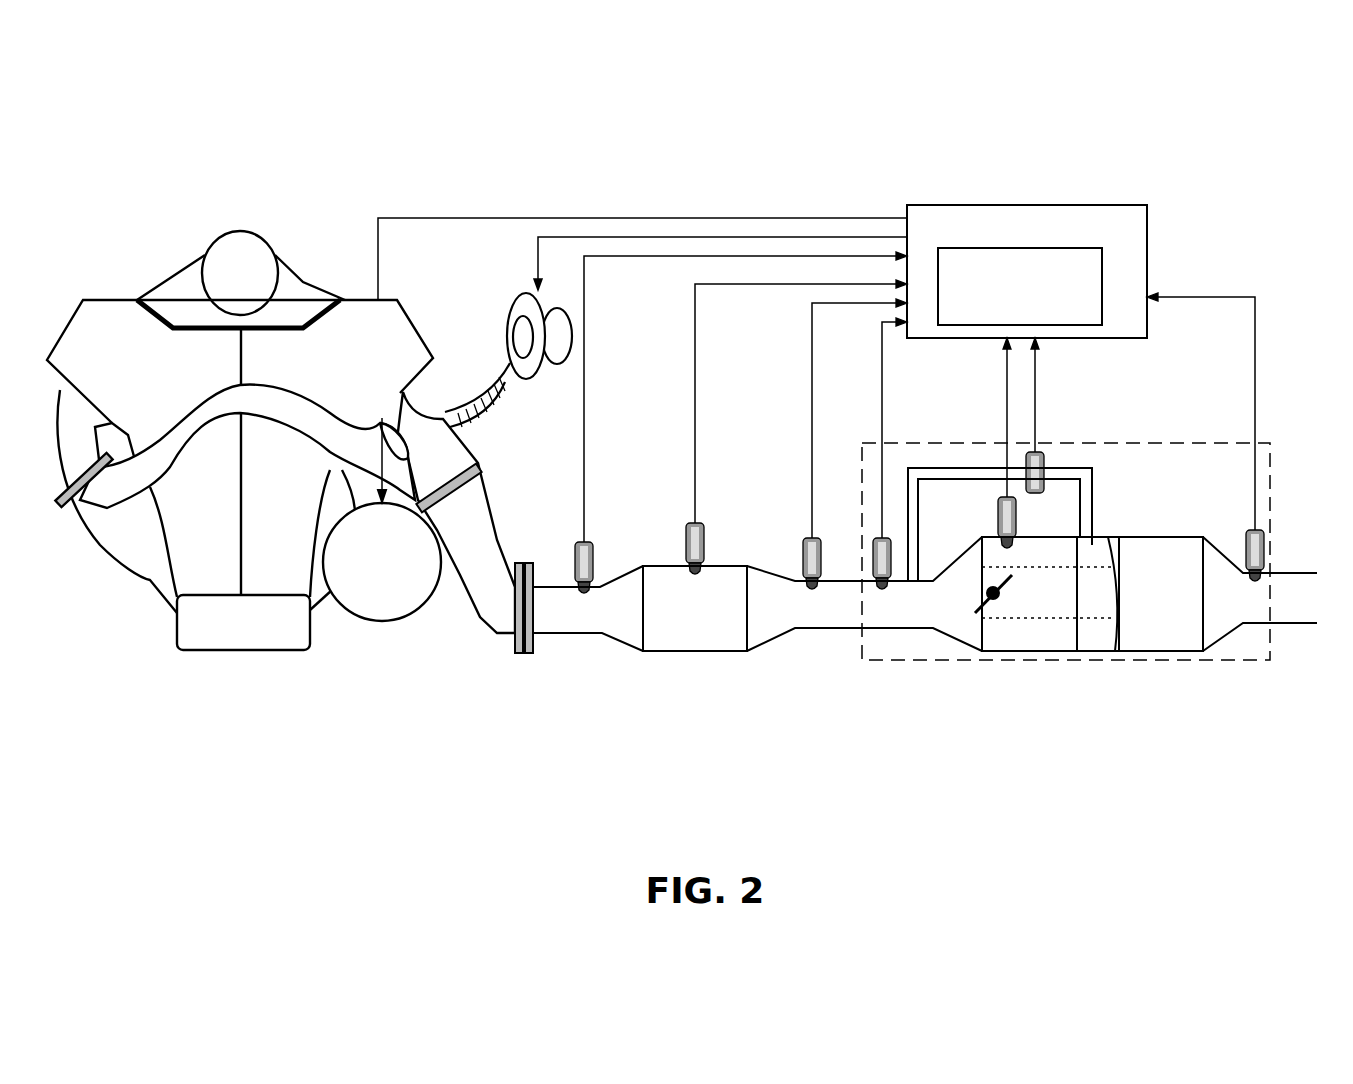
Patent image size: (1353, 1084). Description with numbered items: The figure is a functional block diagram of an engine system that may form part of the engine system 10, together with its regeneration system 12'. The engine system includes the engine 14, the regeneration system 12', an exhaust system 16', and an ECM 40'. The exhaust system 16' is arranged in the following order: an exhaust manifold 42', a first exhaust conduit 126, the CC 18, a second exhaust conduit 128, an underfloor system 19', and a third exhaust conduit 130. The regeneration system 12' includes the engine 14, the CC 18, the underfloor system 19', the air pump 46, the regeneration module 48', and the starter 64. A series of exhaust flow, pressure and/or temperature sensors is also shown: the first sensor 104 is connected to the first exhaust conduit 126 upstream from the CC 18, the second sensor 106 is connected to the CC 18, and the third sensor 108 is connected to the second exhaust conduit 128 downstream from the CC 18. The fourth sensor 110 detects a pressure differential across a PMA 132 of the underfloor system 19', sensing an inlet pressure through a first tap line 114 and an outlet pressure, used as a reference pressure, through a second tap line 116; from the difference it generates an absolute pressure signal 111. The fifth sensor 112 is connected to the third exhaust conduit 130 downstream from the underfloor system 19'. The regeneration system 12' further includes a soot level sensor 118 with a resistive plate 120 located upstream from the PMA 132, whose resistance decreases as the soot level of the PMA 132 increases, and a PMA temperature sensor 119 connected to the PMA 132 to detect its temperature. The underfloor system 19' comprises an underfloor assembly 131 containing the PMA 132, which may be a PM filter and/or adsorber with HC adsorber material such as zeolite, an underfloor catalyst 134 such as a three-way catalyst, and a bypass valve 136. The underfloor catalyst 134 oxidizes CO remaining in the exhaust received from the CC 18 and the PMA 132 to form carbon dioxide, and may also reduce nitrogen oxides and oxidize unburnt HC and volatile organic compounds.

The engine system 10 is at (141, 154).
The regeneration system 12' is at (1164, 157).
The engine 14 is at (106, 300).
The exhaust system 16' is at (458, 759).
The CC 18 is at (697, 651).
The underfloor system 19' is at (1066, 595).
The ECM 40' is at (762, 242).
The exhaust manifold 42' is at (458, 460).
The air pump 46 is at (510, 297).
The regeneration module 48' is at (1032, 266).
The starter 64 is at (398, 618).
The first exhaust flow, pressure and/or temperature sensor 104 is at (578, 540).
The second exhaust flow, pressure and/or temperature sensor 106 is at (688, 523).
The third exhaust flow, pressure and/or temperature sensor 108 is at (806, 538).
The fourth exhaust flow, pressure and/or temperature sensor 110 is at (1042, 448).
The absolute pressure signal 111 is at (1037, 395).
The fifth exhaust flow, pressure and/or temperature sensor 112 is at (1247, 532).
The first tap line 114 is at (963, 447).
The second tap line 116 is at (1093, 493).
The soot level sensor 118 is at (878, 538).
The PMA temperature sensor 119 is at (998, 517).
The resistive plate 120 is at (882, 600).
The first exhaust conduit 126 is at (598, 640).
The second exhaust conduit 128 is at (830, 630).
The third exhaust conduit 130 is at (1280, 623).
The underfloor assembly 131 is at (1018, 651).
The PMA 132 is at (1063, 640).
The underfloor catalyst 134 is at (1158, 630).
The bypass valve 136 is at (1003, 593).